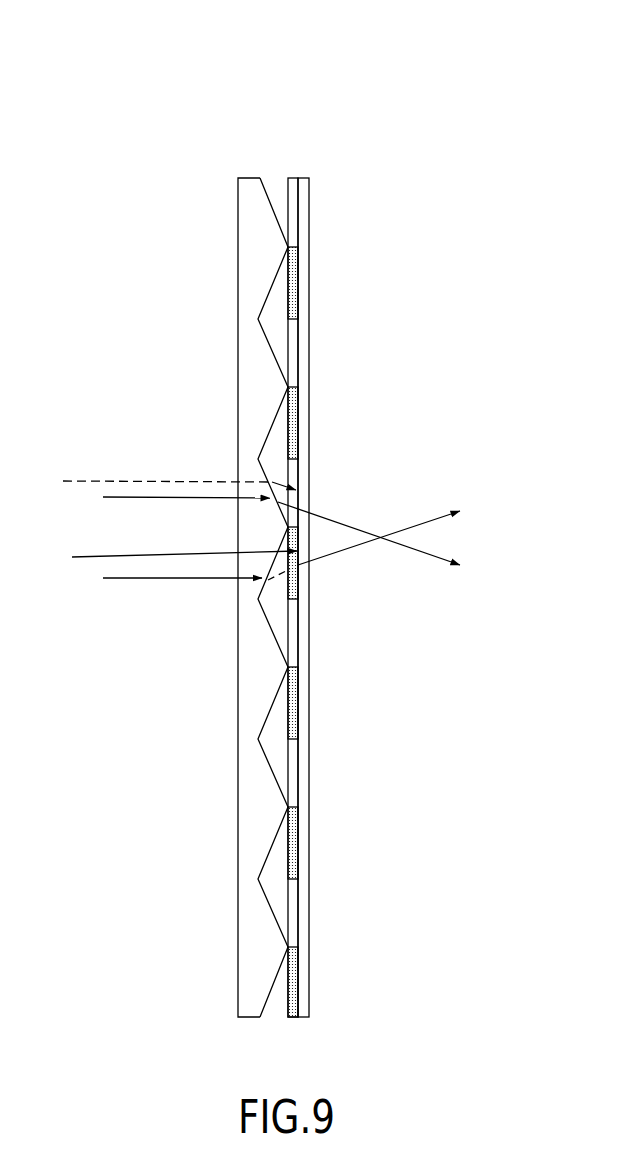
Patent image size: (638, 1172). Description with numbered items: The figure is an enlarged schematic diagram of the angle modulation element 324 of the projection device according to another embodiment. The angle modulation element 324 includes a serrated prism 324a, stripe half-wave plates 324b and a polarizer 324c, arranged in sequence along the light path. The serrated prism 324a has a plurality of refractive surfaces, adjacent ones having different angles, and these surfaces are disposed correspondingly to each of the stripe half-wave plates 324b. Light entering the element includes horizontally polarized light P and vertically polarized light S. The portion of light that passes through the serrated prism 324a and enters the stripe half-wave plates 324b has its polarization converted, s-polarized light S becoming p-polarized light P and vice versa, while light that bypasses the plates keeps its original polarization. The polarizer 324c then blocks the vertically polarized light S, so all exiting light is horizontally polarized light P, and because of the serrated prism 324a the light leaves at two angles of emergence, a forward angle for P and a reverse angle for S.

The angle modulation element 324 is at (122, 58).
The serrated prism 324a is at (252, 209).
The stripe half-wave plates 324b is at (293, 178).
The polarizer 324c is at (303, 178).
The vertically polarized light (s-polarized light) S is at (170, 530).
The horizontally polarized light (p-polarized light) P is at (266, 533).